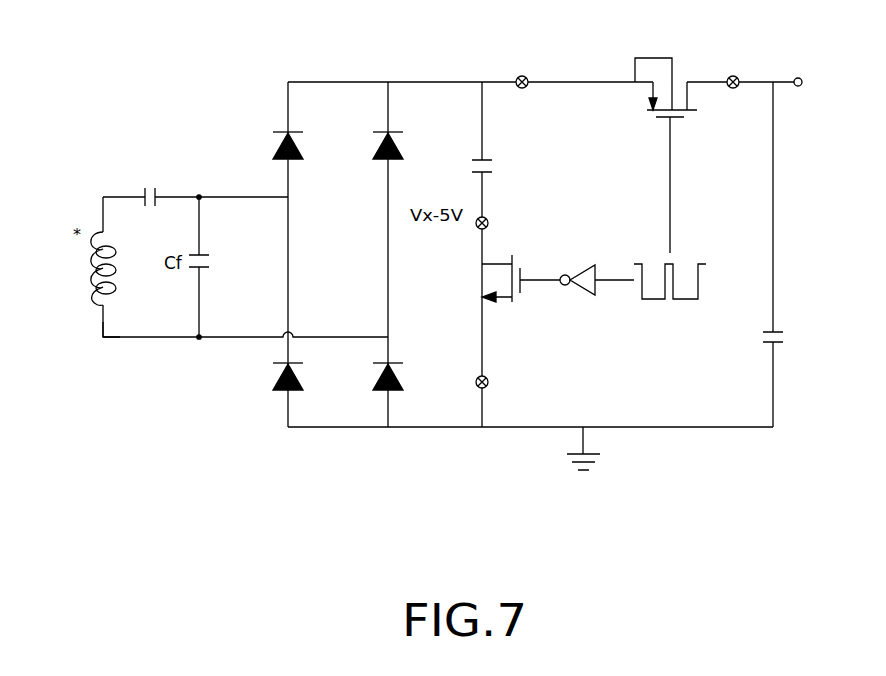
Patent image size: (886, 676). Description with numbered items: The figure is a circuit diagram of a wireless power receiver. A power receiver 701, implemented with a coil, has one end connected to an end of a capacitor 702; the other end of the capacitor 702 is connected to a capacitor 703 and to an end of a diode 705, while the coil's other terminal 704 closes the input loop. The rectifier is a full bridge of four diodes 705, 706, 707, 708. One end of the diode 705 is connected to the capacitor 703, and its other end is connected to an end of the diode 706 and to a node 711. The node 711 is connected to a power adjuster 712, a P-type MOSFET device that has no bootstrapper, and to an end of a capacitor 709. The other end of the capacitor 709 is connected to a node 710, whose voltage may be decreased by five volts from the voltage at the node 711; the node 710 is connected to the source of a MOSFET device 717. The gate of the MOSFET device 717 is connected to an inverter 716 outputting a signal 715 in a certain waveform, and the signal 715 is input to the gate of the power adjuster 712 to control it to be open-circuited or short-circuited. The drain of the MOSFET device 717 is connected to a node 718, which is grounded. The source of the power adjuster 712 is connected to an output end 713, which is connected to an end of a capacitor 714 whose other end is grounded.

The power receiver 701 is at (92, 272).
The capacitor 702 is at (150, 190).
The capacitor 703 is at (214, 262).
The wire terminal 704 is at (103, 340).
The diode 705 is at (303, 145).
The diode 706 is at (403, 145).
The diode 707 is at (303, 375).
The diode 708 is at (403, 375).
The capacitor 709 is at (493, 164).
The node 710 is at (489, 222).
The node 711 is at (522, 75).
The power adjuster 712 is at (678, 70).
The output end 713 is at (735, 75).
The capacitor 714 is at (785, 337).
The signal 715 is at (655, 302).
The inverter 716 is at (594, 300).
The MOSFET device 717 is at (513, 305).
The node 718 is at (489, 382).